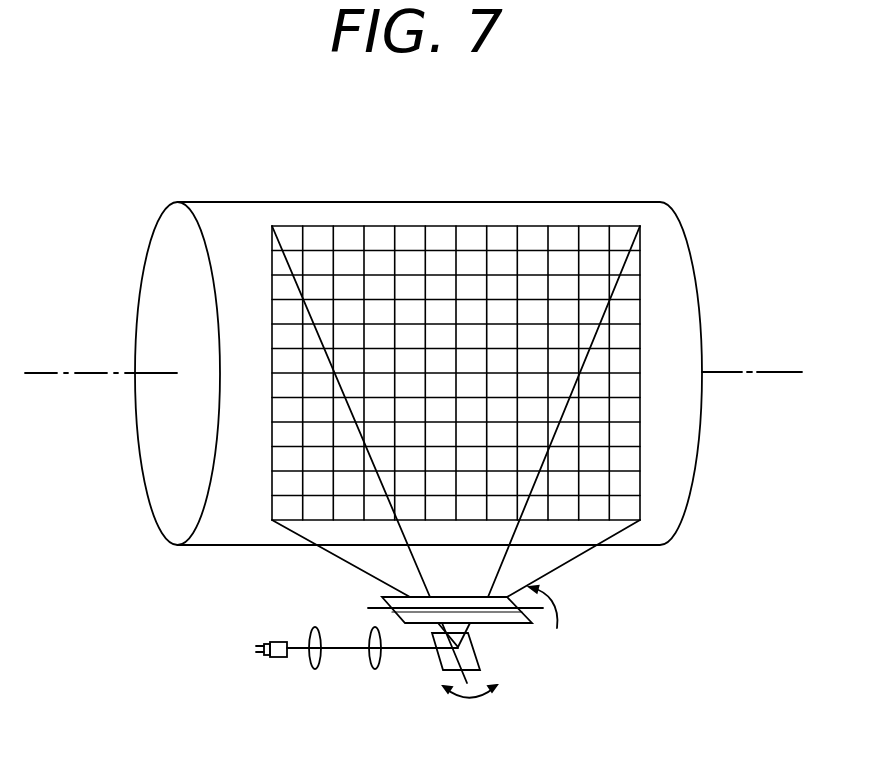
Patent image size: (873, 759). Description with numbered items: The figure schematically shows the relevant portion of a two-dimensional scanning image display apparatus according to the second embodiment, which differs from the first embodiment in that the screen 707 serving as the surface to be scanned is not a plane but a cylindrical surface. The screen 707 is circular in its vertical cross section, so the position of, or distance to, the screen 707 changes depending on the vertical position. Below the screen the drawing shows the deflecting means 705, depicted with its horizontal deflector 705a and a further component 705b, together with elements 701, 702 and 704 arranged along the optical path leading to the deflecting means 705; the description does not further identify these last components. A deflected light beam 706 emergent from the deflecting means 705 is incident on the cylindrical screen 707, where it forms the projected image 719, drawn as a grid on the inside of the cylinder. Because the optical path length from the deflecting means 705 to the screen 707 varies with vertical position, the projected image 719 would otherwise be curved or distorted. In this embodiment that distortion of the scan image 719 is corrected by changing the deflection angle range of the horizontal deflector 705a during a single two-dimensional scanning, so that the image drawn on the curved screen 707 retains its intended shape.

The light source 701 is at (270, 658).
The lens 702 is at (315, 670).
The lens 704 is at (375, 670).
The deflecting means 705 is at (478, 663).
The horizontal deflector 705a is at (483, 655).
The scanning plate 705b is at (490, 628).
The deflected light beam 706 is at (577, 550).
The screen 707 is at (245, 352).
The projected image 719 is at (437, 226).